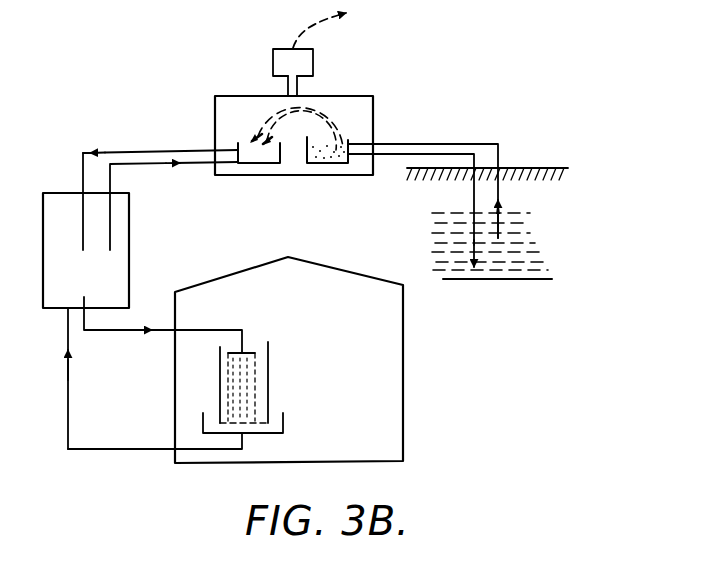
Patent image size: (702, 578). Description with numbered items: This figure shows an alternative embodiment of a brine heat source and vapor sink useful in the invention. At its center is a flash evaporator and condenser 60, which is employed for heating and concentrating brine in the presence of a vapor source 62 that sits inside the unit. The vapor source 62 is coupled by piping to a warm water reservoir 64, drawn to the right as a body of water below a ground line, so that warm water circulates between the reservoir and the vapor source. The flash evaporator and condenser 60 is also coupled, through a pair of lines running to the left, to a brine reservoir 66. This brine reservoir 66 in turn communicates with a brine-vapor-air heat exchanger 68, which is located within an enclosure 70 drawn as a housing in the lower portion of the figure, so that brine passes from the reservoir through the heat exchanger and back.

The flash evaporator and condenser 60 is at (340, 110).
The vapor source 62 is at (336, 163).
The warm water reservoir 64 is at (496, 223).
The brine reservoir 66 is at (86, 250).
The brine-vapor-air heat exchanger 68 is at (263, 387).
The enclosure 70 is at (289, 360).